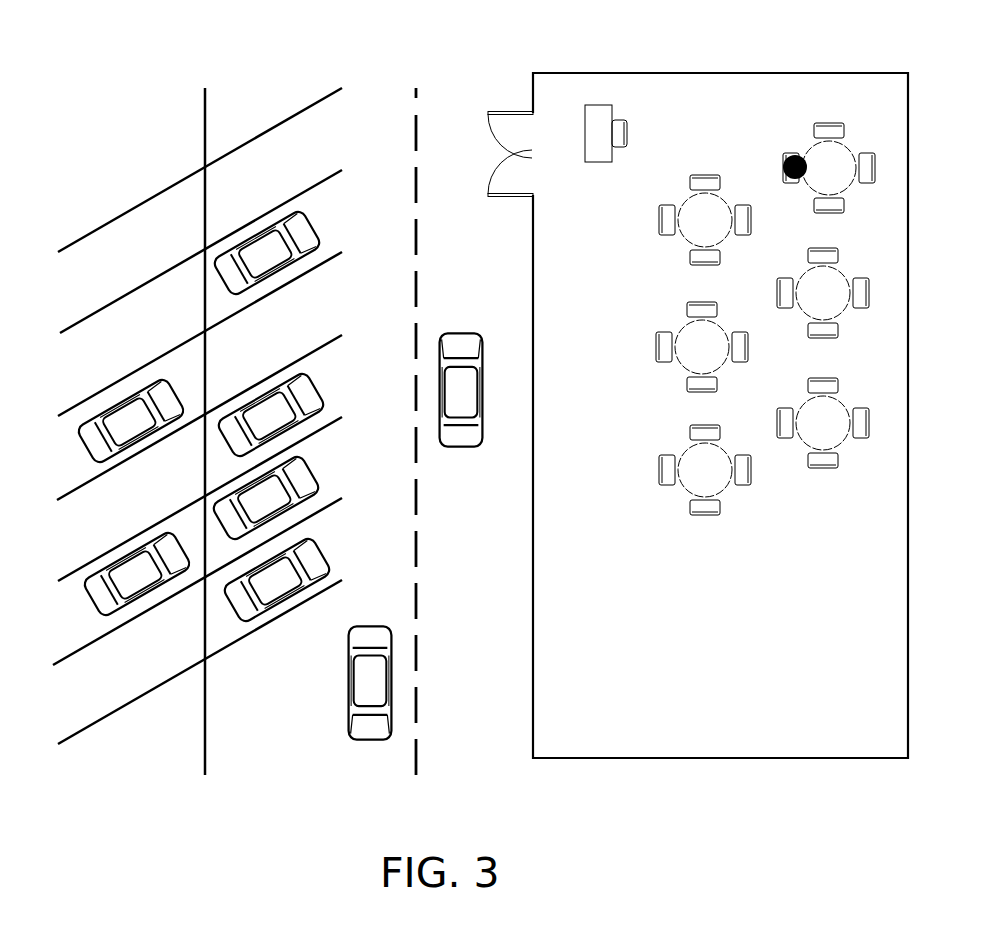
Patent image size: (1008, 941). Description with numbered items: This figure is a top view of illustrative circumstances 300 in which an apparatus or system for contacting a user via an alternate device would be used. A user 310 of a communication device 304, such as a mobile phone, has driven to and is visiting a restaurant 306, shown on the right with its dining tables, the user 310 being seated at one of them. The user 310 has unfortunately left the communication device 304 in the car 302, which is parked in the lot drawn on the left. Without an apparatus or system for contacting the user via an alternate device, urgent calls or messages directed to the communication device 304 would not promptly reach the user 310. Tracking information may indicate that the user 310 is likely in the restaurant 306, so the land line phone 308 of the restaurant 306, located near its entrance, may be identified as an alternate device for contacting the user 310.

The circumstances 300 is at (192, 63).
The car 302 is at (92, 470).
The communication device 304 is at (148, 396).
The restaurant 306 is at (750, 73).
The land line phone 308 is at (619, 78).
The user 310 is at (784, 166).